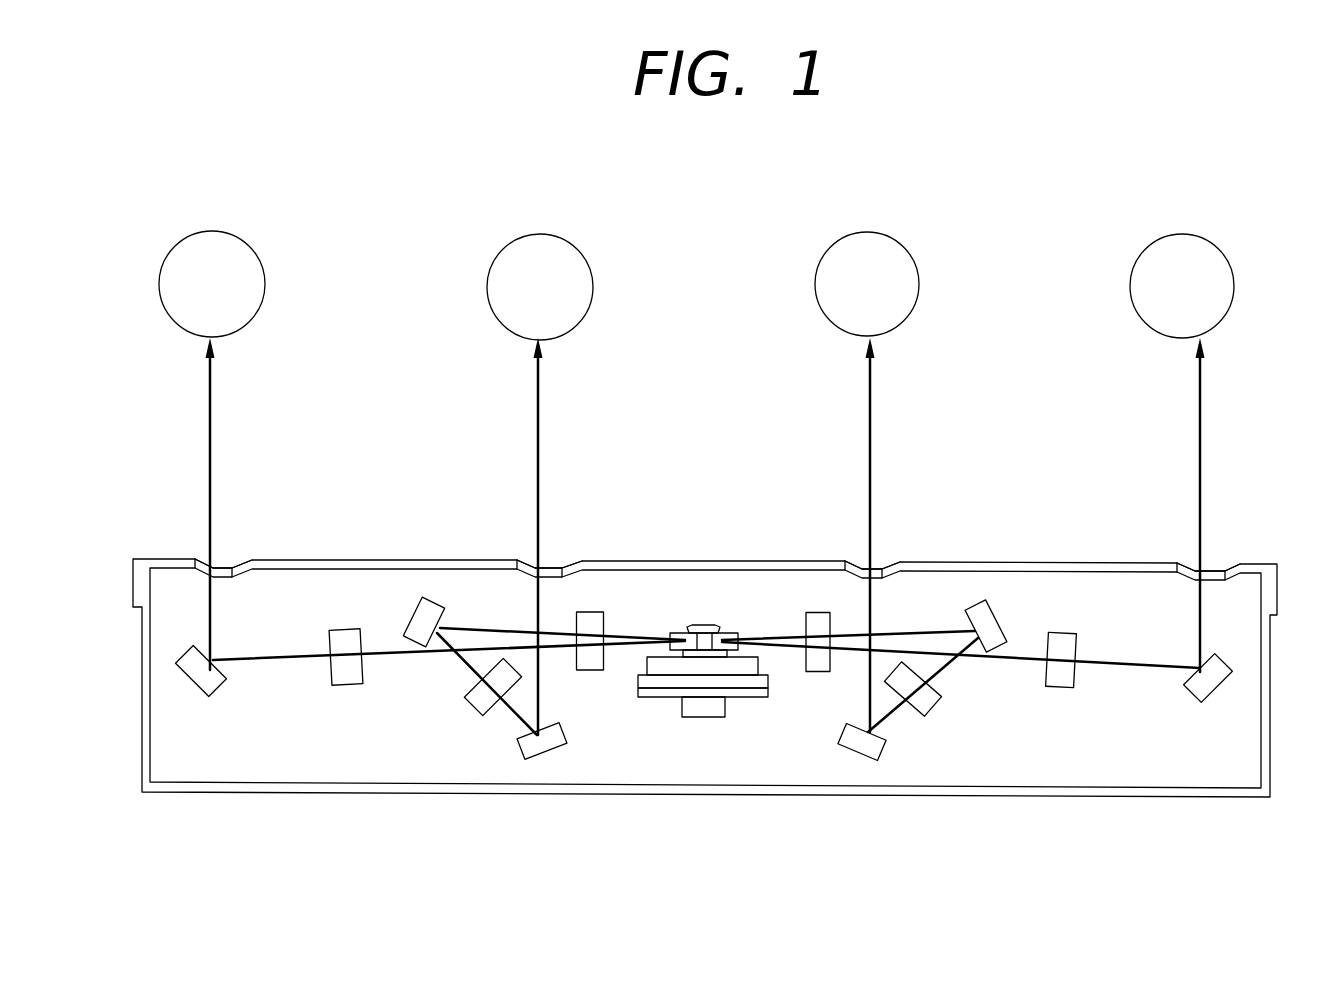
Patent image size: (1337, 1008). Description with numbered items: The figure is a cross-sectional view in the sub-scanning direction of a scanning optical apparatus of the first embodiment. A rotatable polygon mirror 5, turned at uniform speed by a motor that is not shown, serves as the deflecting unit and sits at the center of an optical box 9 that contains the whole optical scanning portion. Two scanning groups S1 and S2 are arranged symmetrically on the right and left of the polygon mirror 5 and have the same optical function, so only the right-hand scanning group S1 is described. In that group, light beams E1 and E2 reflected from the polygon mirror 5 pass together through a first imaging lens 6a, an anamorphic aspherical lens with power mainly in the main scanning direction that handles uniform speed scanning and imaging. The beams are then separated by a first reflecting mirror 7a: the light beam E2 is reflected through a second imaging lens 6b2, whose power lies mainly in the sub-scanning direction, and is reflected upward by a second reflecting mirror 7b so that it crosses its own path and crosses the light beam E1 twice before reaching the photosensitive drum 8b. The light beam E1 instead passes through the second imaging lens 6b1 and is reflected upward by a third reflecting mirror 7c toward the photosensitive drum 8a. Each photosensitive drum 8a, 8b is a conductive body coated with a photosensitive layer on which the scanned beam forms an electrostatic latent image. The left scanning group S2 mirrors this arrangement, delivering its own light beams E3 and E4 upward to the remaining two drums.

The polygon mirror 5 is at (703, 645).
The first imaging lens 6a is at (820, 672).
The second imaging lens 6b1 is at (1062, 687).
The second imaging lens 6b2 is at (930, 707).
The first reflecting mirror 7a is at (993, 645).
The second reflecting mirror 7b is at (855, 753).
The third reflecting mirror 7c is at (1213, 693).
The photosensitive drum 8a is at (1210, 265).
The photosensitive drum 8b is at (842, 253).
The optical box 9 is at (293, 763).
The light beam E1 is at (1190, 568).
The light beam E2 is at (853, 568).
The exit window E3 is at (527, 568).
The exit window E4 is at (223, 568).
The scanning group S1 is at (1025, 211).
The scanning group S2 is at (382, 211).